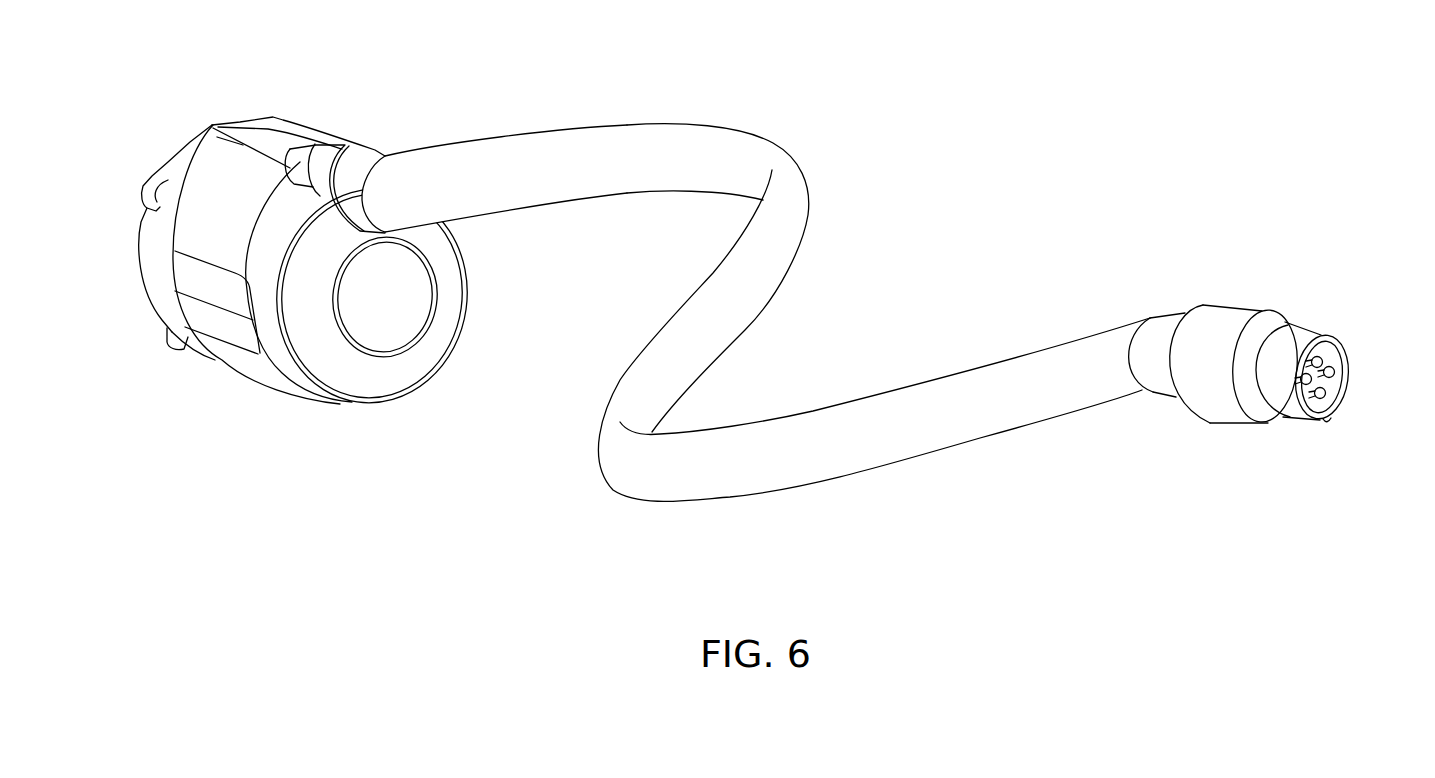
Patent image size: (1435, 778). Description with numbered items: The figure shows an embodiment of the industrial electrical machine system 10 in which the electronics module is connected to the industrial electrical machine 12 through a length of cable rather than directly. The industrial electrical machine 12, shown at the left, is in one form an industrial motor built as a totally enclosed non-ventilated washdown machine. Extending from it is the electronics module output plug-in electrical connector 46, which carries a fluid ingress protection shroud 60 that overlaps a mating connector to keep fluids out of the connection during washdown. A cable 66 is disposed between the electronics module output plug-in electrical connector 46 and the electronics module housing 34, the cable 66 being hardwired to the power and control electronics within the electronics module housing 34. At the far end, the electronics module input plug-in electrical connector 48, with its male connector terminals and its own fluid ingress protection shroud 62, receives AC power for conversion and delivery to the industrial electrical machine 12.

The industrial electrical machine system 10 is at (1158, 95).
The industrial electrical machine 12 is at (290, 74).
The electronics module housing 34 is at (1192, 417).
The electronics module output plug-in electrical connector 46 is at (415, 128).
The electronics module input plug-in electrical connector 48 is at (1337, 325).
The fluid ingress protection shroud 60 is at (393, 157).
The fluid ingress protection shroud 62 is at (1338, 400).
The cable 66 is at (823, 408).